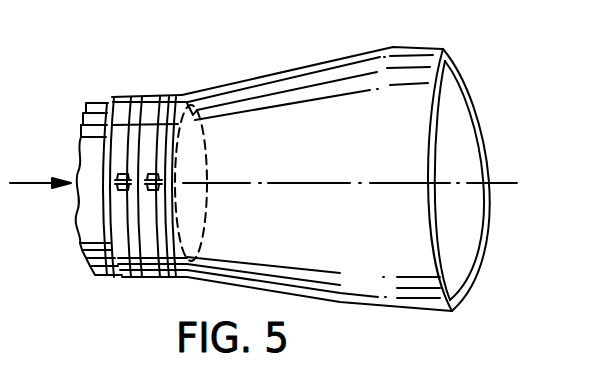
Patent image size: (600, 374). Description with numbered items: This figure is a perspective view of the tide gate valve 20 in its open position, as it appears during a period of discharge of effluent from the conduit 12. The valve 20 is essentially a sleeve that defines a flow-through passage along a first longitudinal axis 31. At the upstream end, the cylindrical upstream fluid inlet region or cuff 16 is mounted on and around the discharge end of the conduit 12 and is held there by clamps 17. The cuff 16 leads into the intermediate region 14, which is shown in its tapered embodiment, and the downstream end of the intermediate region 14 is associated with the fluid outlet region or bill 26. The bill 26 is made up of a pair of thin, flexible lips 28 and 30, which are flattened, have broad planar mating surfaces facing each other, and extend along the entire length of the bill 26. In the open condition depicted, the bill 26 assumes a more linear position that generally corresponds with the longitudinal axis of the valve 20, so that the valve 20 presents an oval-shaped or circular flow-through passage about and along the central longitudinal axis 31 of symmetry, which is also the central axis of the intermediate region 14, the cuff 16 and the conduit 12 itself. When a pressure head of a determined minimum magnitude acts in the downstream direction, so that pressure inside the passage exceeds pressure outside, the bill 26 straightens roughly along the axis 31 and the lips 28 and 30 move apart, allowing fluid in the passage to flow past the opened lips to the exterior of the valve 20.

The conduit 12 is at (97, 103).
The intermediate region 14 is at (290, 68).
The cuff 16 is at (122, 97).
The clamps 17 is at (137, 93).
The tide gate valve 20 is at (490, 67).
The bill 26 is at (413, 48).
The lip 28 is at (427, 240).
The lip 30 is at (488, 229).
The longitudinal axis 31 is at (496, 183).